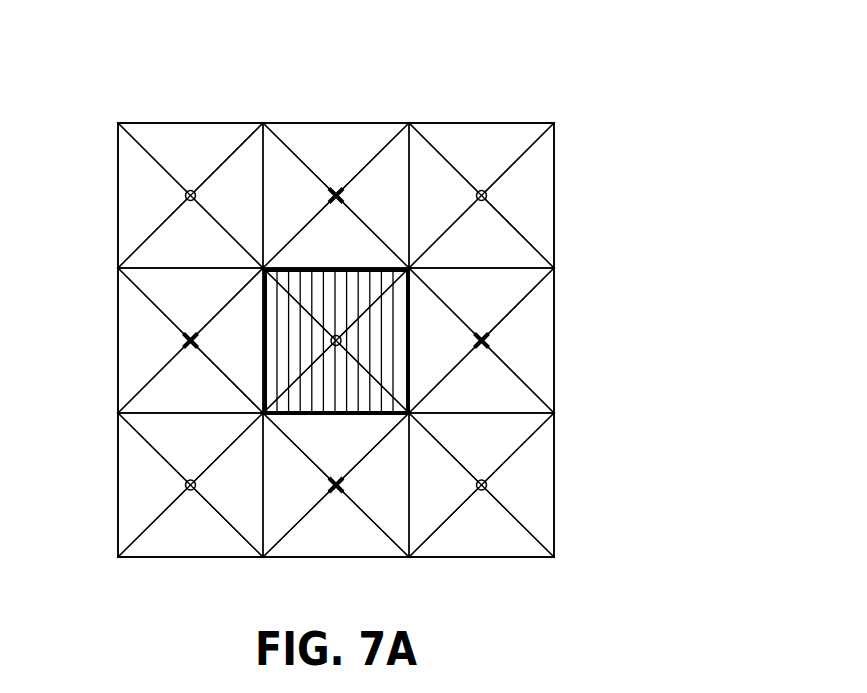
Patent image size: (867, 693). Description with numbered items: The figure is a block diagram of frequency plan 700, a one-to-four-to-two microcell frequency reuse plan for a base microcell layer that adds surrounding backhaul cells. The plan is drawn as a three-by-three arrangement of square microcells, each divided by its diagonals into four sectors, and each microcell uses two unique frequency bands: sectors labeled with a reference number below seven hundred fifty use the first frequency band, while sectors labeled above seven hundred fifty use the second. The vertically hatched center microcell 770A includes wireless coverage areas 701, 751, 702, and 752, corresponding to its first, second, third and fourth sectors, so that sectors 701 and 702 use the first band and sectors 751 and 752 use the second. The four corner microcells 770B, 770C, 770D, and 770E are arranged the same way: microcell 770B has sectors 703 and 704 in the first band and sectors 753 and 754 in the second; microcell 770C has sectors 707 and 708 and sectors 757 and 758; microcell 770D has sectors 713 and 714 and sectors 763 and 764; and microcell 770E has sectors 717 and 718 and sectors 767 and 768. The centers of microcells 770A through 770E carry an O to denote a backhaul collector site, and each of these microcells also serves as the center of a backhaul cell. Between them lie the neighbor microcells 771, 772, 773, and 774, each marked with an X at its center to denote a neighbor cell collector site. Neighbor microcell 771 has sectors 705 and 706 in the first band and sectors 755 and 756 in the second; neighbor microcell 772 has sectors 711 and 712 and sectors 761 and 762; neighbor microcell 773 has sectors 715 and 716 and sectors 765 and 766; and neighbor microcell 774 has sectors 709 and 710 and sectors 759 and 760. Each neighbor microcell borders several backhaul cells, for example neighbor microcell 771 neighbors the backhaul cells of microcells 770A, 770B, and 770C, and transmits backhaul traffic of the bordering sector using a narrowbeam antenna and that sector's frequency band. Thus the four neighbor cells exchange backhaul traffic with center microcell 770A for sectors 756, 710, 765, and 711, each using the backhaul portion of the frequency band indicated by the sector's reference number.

The frequency plan 700 is at (582, 68).
The wireless coverage area 701 is at (336, 304).
The wireless coverage area 702 is at (336, 377).
The sector 703 is at (190, 159).
The sector 704 is at (190, 232).
The sector 705 is at (299, 195).
The sector 706 is at (372, 195).
The sector 707 is at (481, 159).
The sector 708 is at (481, 232).
The sector 709 is at (154, 340).
The sector 710 is at (227, 340).
The sector 711 is at (445, 340).
The sector 712 is at (518, 340).
The sector 713 is at (190, 449).
The sector 714 is at (190, 521).
The sector 715 is at (299, 485).
The sector 716 is at (372, 485).
The sector 717 is at (481, 449).
The sector 718 is at (481, 521).
The wireless coverage area 751 is at (299, 340).
The wireless coverage area 752 is at (372, 340).
The sector 753 is at (154, 195).
The sector 754 is at (227, 195).
The sector 755 is at (336, 159).
The sector 756 is at (336, 232).
The sector 757 is at (445, 195).
The sector 758 is at (518, 195).
The sector 759 is at (190, 304).
The sector 760 is at (190, 377).
The sector 761 is at (481, 304).
The sector 762 is at (481, 377).
The sector 763 is at (154, 485).
The sector 764 is at (227, 485).
The sector 765 is at (336, 449).
The sector 766 is at (336, 521).
The sector 767 is at (445, 485).
The sector 768 is at (518, 485).
The center microcell 770A is at (467, 341).
The microcell 770B is at (190, 107).
The microcell 770C is at (501, 107).
The microcell 770D is at (213, 587).
The microcell 770E is at (510, 586).
The neighbor microcell 771 is at (349, 107).
The neighbor microcell 772 is at (604, 340).
The neighbor microcell 773 is at (344, 587).
The neighbor microcell 774 is at (74, 340).